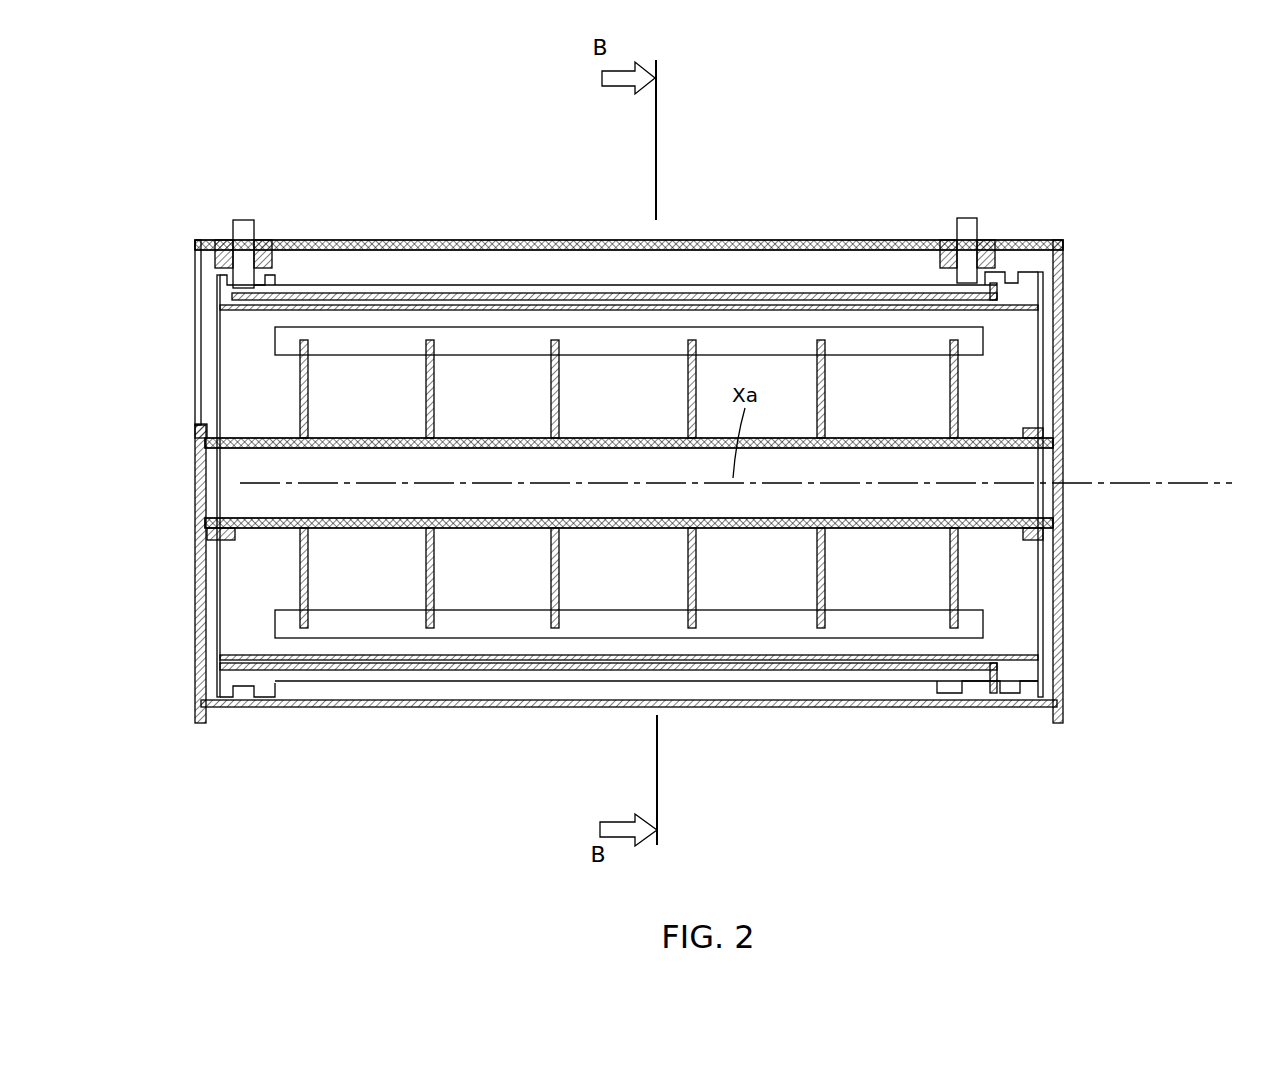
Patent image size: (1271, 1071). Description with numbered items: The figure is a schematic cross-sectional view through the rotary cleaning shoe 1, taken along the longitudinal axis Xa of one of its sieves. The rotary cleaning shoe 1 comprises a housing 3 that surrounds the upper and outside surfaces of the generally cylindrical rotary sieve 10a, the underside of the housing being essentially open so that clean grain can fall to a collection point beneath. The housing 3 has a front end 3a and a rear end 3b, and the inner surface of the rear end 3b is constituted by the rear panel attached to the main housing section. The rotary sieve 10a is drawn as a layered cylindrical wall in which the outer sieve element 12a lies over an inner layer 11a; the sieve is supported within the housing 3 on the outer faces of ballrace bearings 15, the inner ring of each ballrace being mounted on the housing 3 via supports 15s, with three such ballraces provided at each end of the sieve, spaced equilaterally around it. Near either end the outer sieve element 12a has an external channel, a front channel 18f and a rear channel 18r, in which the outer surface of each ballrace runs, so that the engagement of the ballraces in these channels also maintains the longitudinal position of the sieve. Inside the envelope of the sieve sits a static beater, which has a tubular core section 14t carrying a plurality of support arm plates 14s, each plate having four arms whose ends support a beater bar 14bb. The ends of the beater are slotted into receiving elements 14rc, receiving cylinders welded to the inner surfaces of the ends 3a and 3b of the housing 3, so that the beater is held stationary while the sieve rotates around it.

The rotary cleaning shoe 1 is at (937, 107).
The housing 3 is at (745, 242).
The front end of housing 3a is at (197, 555).
The rear end of housing 3b is at (1063, 292).
The rotary sieve 10a is at (570, 693).
The insulating layer 11a is at (700, 305).
The outer sieve element 12a is at (493, 285).
The beater bar 14bb is at (628, 350).
The receiving element 14rc is at (216, 440).
The support arm plate 14s is at (963, 400).
The tubular core section 14t is at (258, 516).
The ballrace bearing 15 is at (245, 232).
The support 15s is at (222, 240).
The front external channel 18f is at (235, 285).
The rear external channel 18r is at (987, 306).